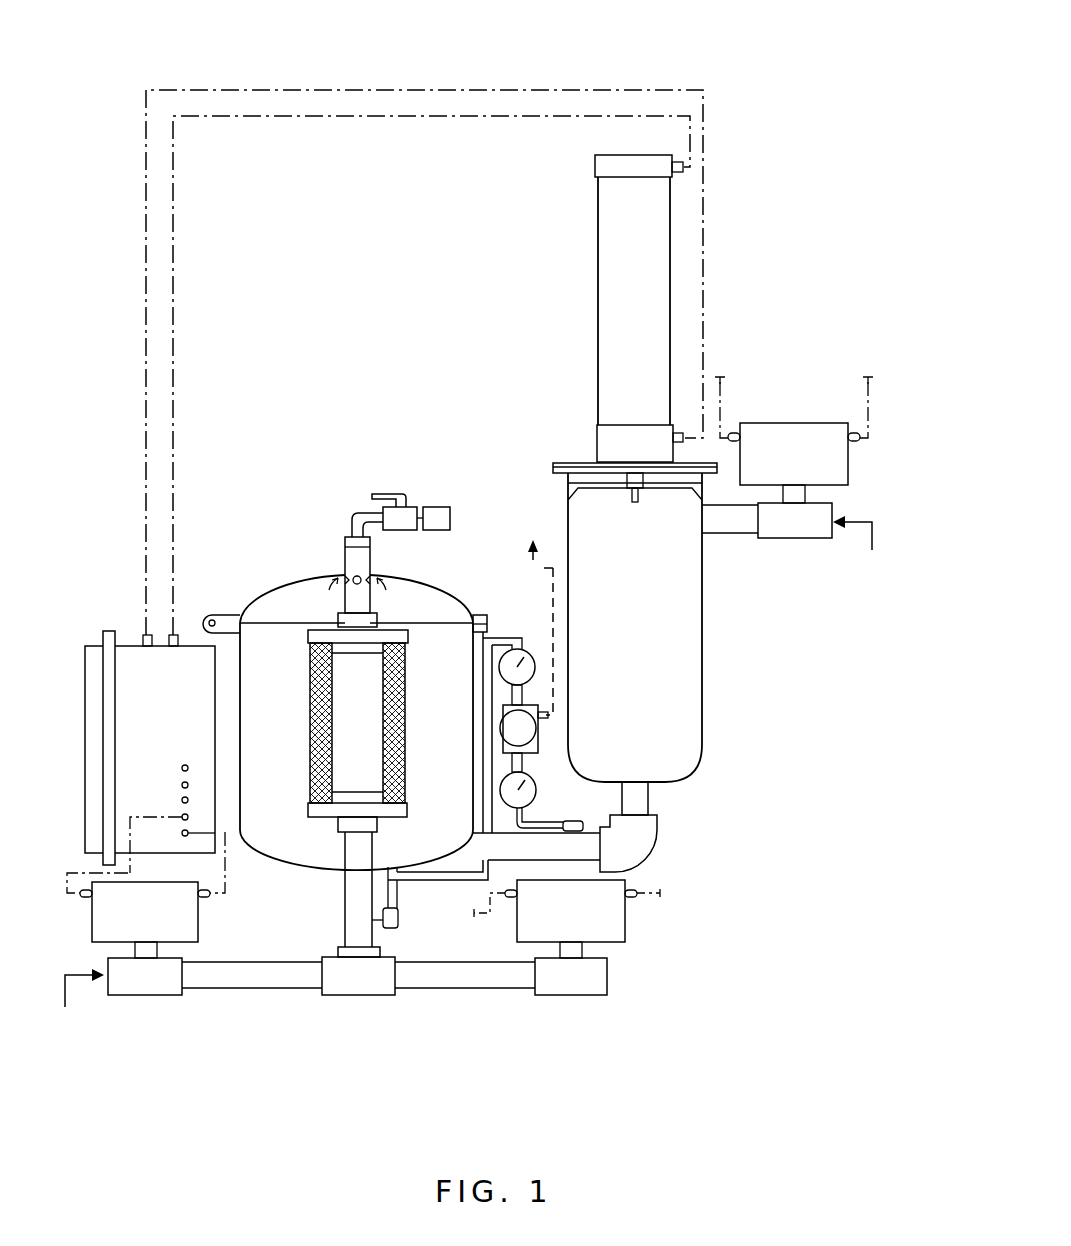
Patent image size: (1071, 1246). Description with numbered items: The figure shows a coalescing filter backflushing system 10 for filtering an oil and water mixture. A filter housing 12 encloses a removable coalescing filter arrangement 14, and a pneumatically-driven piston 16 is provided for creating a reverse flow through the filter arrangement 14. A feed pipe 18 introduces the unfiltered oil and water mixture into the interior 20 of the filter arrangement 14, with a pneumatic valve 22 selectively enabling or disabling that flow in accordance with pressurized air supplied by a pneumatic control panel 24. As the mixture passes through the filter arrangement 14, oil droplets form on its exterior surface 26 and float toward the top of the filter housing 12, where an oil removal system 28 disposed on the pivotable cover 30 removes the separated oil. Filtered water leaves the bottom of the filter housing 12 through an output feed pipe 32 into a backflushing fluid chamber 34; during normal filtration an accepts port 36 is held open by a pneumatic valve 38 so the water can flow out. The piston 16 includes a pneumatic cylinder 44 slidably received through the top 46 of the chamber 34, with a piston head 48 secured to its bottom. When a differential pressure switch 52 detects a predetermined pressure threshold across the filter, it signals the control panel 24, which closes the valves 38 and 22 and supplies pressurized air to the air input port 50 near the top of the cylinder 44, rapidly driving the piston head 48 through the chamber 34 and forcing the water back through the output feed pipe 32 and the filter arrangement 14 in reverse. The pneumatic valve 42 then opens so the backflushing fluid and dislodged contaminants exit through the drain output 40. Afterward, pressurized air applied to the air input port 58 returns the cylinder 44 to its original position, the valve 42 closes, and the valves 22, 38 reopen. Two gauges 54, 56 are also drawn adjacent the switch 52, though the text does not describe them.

The coalescing filter backflushing system 10 is at (778, 72).
The filter housing 12 is at (295, 867).
The coalescing filter arrangement 14 is at (406, 698).
The pneumatically-driven piston 16 is at (560, 420).
The feed pipe 18 is at (237, 985).
The interior 20 is at (370, 726).
The pneumatic valve 22 is at (150, 993).
The pneumatic control panel 24 is at (95, 660).
The exterior surface 26 is at (309, 708).
The oil removal system 28 is at (350, 517).
The pivotable cover 30 is at (447, 593).
The output feed pipe 32 is at (533, 857).
The backflushing fluid chamber 34 is at (651, 644).
The accepts port 36 is at (725, 522).
The pneumatic valve 38 is at (795, 530).
The drain output 40 is at (487, 983).
The pneumatic valve 42 is at (578, 988).
The pneumatic cylinder 44 is at (608, 255).
The top 46 is at (560, 462).
The piston head 48 is at (590, 490).
The air input port 50 is at (683, 157).
The differential pressure switch 52 is at (541, 747).
The pressure gauge 54 is at (528, 650).
The pressure gauge 56 is at (536, 783).
The air input port 58 is at (682, 432).